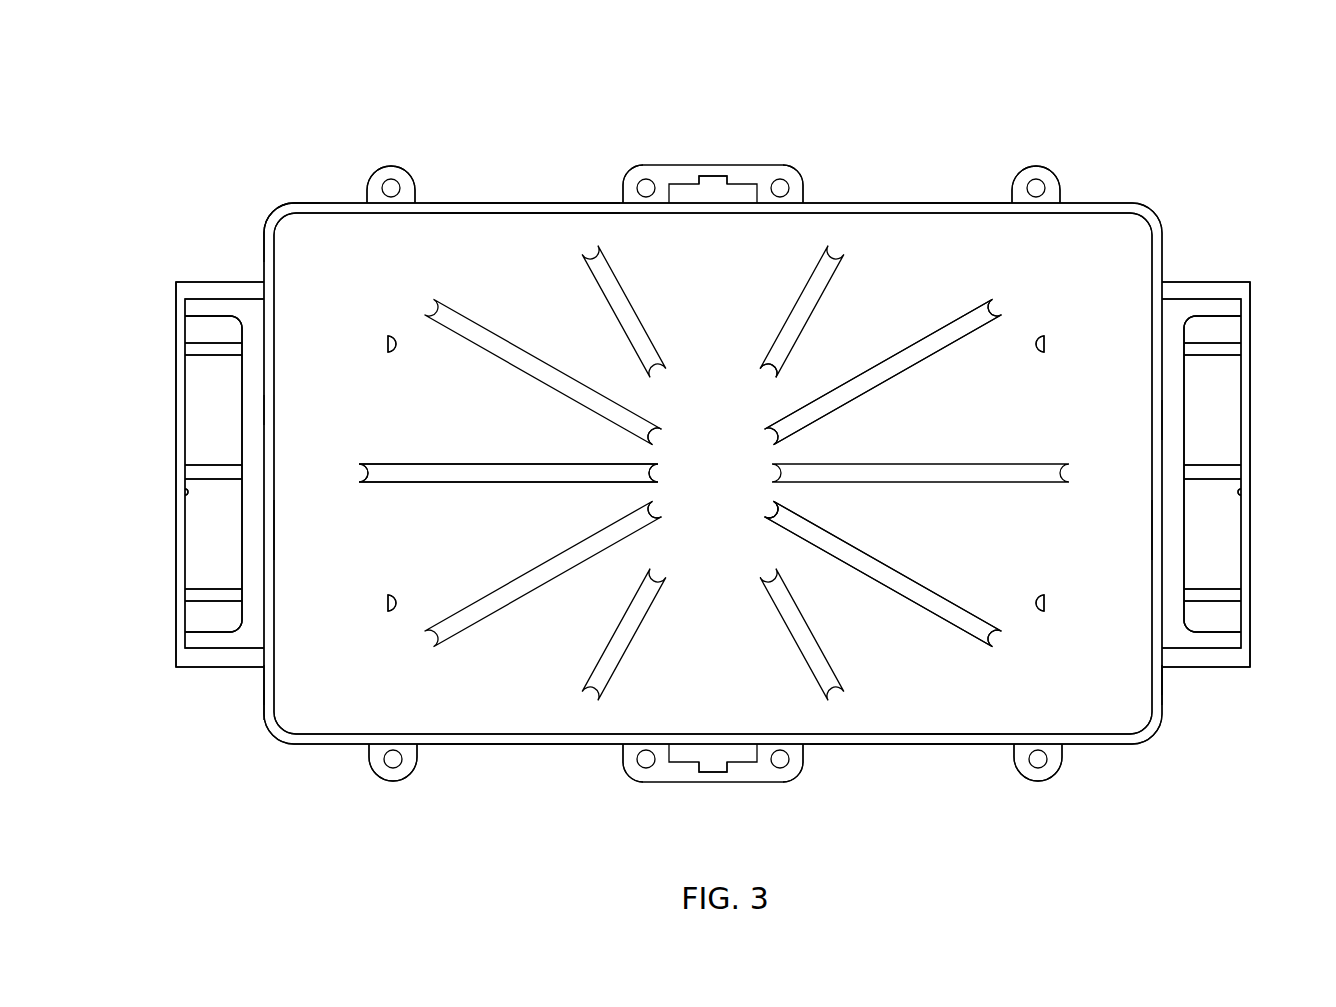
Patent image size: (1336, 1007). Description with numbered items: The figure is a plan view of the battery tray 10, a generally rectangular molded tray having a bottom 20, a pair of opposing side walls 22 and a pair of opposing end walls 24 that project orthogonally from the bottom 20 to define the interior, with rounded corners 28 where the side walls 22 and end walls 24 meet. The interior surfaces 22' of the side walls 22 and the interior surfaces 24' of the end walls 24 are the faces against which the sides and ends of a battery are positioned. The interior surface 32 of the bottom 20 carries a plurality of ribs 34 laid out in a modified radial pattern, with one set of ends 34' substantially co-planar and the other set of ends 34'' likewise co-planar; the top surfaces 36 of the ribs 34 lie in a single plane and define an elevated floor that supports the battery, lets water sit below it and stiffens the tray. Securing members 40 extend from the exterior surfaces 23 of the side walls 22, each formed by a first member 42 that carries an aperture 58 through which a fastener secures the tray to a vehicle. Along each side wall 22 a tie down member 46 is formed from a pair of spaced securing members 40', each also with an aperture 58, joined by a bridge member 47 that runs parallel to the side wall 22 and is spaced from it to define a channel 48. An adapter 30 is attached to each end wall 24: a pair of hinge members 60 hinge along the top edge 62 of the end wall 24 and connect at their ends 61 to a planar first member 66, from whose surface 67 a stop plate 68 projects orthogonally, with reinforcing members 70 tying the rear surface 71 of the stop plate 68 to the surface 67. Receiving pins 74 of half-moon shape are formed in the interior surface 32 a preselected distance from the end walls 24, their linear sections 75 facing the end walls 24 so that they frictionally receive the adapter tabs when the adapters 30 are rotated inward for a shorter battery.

The battery tray 10 is at (468, 82).
The bottom 20 is at (308, 232).
The side walls 22 is at (715, 478).
The interior surfaces of side walls 22' is at (722, 473).
The exterior surfaces of side walls 23 is at (933, 203).
The end walls 24 is at (706, 725).
The interior surfaces of end walls 24' is at (713, 532).
The rounded corners 28 is at (280, 218).
The adapter 30 is at (122, 268).
The interior surface 32 is at (741, 692).
The ribs 34 is at (714, 473).
The ends of ribs 34' is at (683, 498).
The ends of ribs 34'' is at (738, 441).
The top surfaces of ribs 36 is at (822, 282).
The securing members 40 is at (711, 473).
The securing members 40' is at (716, 479).
The first member 42 is at (413, 172).
The tie down members 46 is at (704, 121).
The bridge member 47 is at (683, 184).
The channel 48 is at (740, 184).
The apertures 58 is at (390, 180).
The hinge members 60 is at (205, 288).
The ends of hinge members 61 is at (178, 290).
The top edge of end wall 62 is at (266, 410).
The first member 66 is at (185, 450).
The surface of first member 67 is at (183, 492).
The stop plate 68 is at (205, 528).
The reinforcing members 70 is at (215, 350).
The rear surface of stop plate 71 is at (228, 432).
The receiving pins 74 is at (396, 350).
The linear section 75 is at (387, 343).